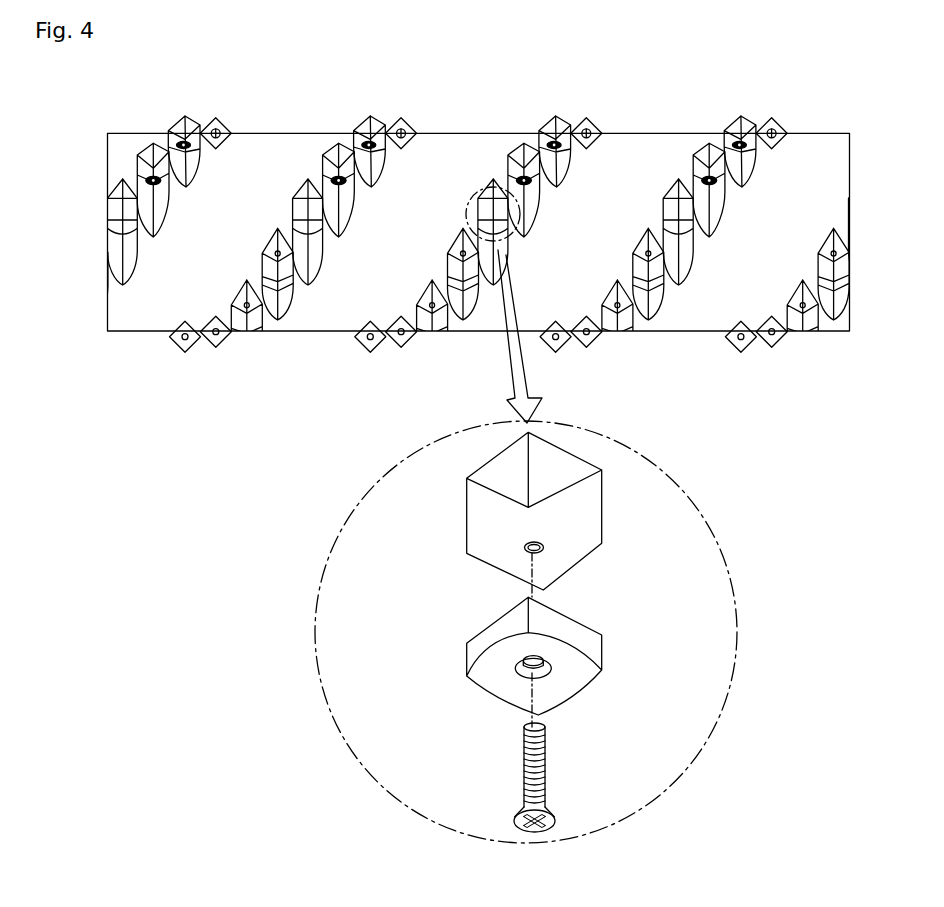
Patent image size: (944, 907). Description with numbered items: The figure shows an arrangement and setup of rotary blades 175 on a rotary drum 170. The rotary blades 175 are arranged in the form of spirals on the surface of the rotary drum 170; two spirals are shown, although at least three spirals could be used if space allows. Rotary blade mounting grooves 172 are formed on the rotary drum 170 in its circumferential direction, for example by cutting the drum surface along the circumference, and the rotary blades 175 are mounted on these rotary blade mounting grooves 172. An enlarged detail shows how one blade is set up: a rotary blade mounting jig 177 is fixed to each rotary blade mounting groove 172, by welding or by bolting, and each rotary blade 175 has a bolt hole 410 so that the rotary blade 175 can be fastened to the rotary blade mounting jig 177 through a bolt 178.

The rotary drum 170 is at (468, 143).
The rotary blade mounting groove 172 is at (497, 243).
The rotary blade 175 is at (579, 636).
The rotary blade mounting jig 177 is at (592, 492).
The bolt 178 is at (543, 776).
The bolt hole 410 is at (546, 666).